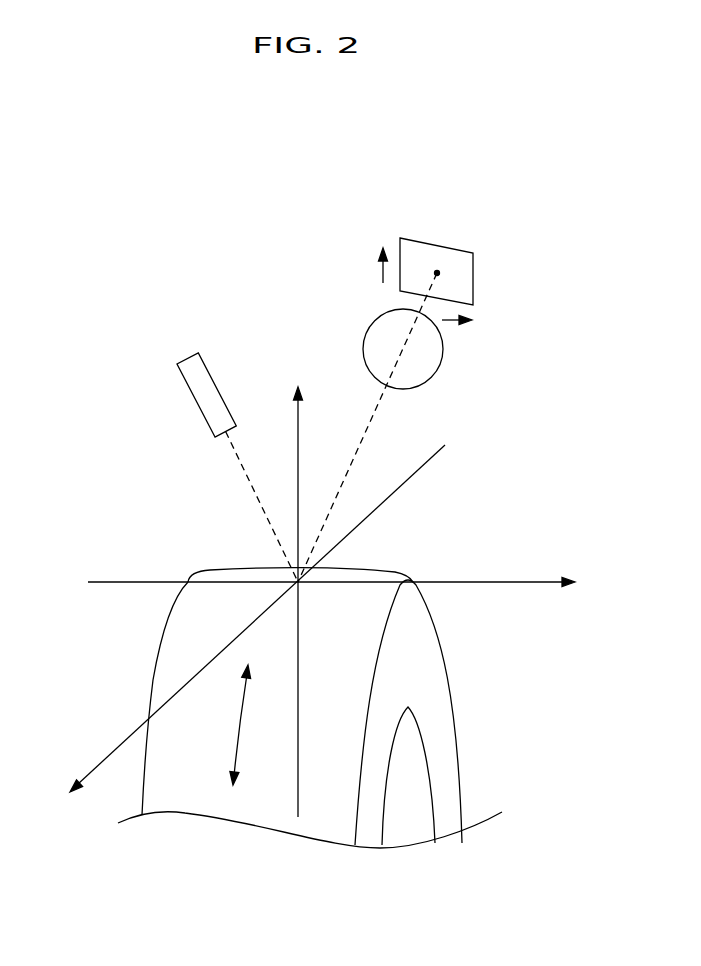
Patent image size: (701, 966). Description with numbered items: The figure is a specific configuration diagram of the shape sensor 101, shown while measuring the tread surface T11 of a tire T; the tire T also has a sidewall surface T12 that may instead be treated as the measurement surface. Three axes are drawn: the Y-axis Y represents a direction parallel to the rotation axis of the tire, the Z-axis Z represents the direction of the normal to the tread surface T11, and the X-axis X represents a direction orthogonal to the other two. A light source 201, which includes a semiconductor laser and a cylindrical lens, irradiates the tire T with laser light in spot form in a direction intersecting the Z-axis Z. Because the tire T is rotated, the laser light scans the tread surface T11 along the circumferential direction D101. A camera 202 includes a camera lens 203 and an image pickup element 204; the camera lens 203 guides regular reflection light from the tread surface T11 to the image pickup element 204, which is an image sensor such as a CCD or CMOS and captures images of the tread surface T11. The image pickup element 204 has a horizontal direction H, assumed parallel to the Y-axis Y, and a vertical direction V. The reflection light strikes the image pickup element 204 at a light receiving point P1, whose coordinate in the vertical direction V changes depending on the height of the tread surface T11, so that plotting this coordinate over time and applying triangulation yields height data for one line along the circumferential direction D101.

The shape sensor 101 is at (248, 183).
The light source 201 is at (190, 352).
The camera 202 is at (366, 294).
The camera lens 203 is at (423, 348).
The image pickup element 204 is at (419, 238).
The light receiving point P1 is at (437, 273).
The tire T is at (470, 640).
The tread surface T11 is at (182, 627).
The sidewall surface T12 is at (445, 712).
The circumferential direction D101 is at (208, 725).
The X-axis X is at (247, 630).
The Y-axis Y is at (343, 582).
The Z-axis Z is at (298, 589).
The vertical direction V is at (383, 252).
The horizontal direction H is at (468, 322).